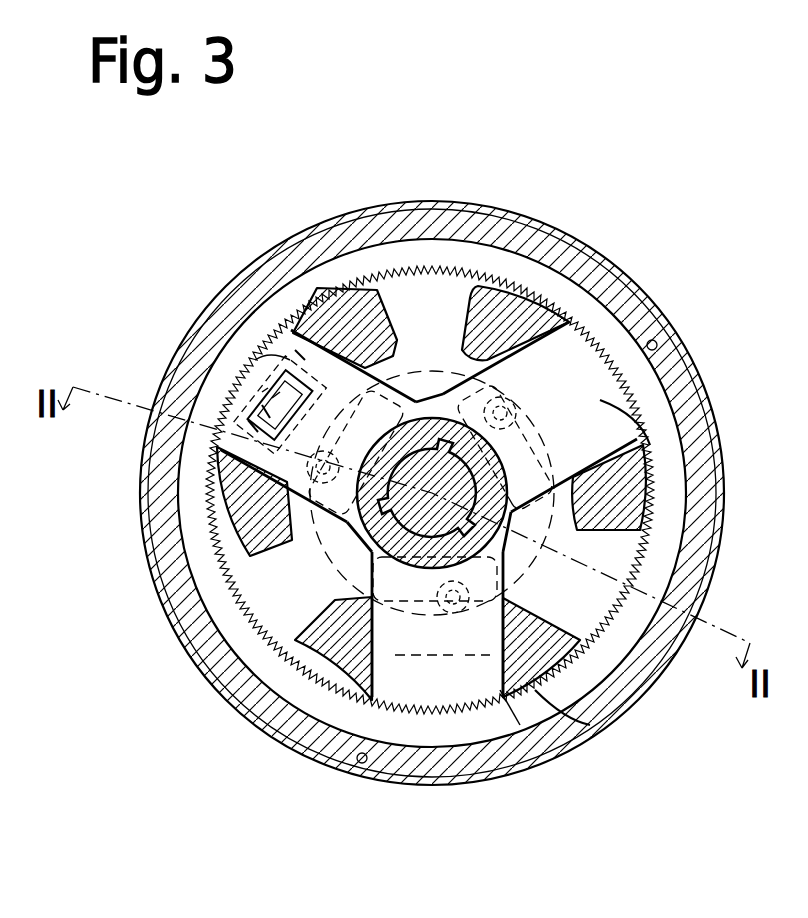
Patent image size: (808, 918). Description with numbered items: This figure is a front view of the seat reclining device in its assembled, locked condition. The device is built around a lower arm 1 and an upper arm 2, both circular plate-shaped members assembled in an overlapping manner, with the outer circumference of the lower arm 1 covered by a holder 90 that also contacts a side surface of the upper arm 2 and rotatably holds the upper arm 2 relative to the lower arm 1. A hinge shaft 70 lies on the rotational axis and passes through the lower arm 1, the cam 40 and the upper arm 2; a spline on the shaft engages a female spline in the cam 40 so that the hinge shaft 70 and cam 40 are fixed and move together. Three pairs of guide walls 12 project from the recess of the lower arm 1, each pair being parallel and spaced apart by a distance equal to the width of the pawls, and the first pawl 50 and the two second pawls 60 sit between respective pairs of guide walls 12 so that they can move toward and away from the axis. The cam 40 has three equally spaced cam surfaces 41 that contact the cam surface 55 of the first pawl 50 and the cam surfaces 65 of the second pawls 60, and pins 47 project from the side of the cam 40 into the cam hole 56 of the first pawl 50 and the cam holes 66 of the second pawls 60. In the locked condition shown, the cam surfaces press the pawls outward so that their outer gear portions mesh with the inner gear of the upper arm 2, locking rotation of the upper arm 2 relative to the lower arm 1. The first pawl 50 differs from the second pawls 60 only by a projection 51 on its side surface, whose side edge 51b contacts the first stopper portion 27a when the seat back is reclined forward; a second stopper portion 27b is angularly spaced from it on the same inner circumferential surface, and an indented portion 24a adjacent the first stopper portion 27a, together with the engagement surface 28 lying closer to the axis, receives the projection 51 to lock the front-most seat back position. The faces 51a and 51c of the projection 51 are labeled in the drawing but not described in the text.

The lower arm 1 is at (373, 235).
The upper arm 2 is at (500, 255).
The guide walls 12 is at (313, 325).
The indented portion 24a is at (300, 700).
The first stopper portion 27a is at (445, 745).
The second stopper portion 27b is at (582, 387).
The engagement surface 28 is at (265, 578).
The cam 40 is at (605, 662).
The cam surfaces 41 is at (303, 458).
The pins 47 is at (323, 469).
The first pawl 50 is at (262, 355).
The projection 51 is at (285, 365).
The pawl face 51a is at (262, 405).
The side edge 51b is at (258, 420).
The pawl edge 51c is at (300, 345).
The cam surface 55 is at (265, 390).
The cam hole 56 is at (275, 395).
The second pawl 60 is at (572, 735).
The cam surface 65 is at (520, 722).
The cam hole 66 is at (362, 758).
The hinge shaft 70 is at (470, 488).
The holder 90 is at (455, 206).